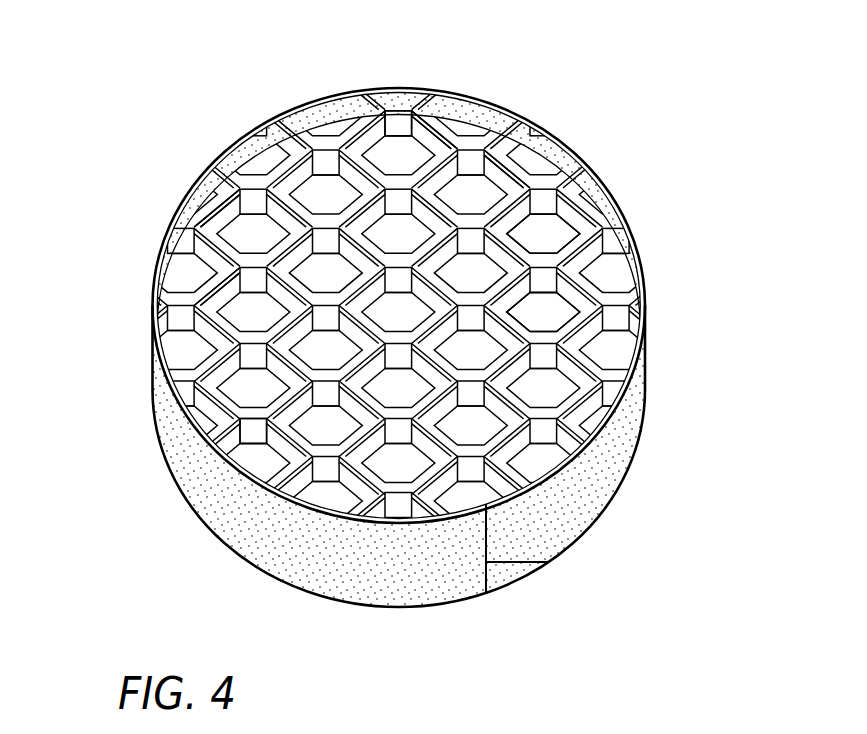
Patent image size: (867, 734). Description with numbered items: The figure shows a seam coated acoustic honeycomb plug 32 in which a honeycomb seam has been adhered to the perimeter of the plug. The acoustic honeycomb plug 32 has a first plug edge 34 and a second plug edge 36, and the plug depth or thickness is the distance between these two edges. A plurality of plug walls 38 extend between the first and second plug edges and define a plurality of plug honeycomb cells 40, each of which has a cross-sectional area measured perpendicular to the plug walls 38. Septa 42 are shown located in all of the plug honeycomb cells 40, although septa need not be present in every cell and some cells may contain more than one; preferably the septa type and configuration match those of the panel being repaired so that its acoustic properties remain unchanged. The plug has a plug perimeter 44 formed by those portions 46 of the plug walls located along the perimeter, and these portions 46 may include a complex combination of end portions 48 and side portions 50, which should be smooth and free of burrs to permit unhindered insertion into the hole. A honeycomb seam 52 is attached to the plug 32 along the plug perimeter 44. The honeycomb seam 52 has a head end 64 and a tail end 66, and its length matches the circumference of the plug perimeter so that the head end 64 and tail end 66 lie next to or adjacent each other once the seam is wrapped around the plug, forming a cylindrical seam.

The acoustic honeycomb plug 32 is at (662, 167).
The first plug edge 34 is at (207, 327).
The second plug edge 36 is at (213, 238).
The plug walls 38 is at (437, 145).
The plug honeycomb cells 40 is at (547, 300).
The septa 42 is at (548, 233).
The plug perimeter 44 is at (617, 405).
The portions of the plug walls 46 is at (562, 176).
The end portions 48 is at (243, 437).
The side portions 50 is at (398, 108).
The honeycomb seam 52 is at (563, 505).
The head end 64 is at (486, 543).
The tail end 66 is at (540, 563).